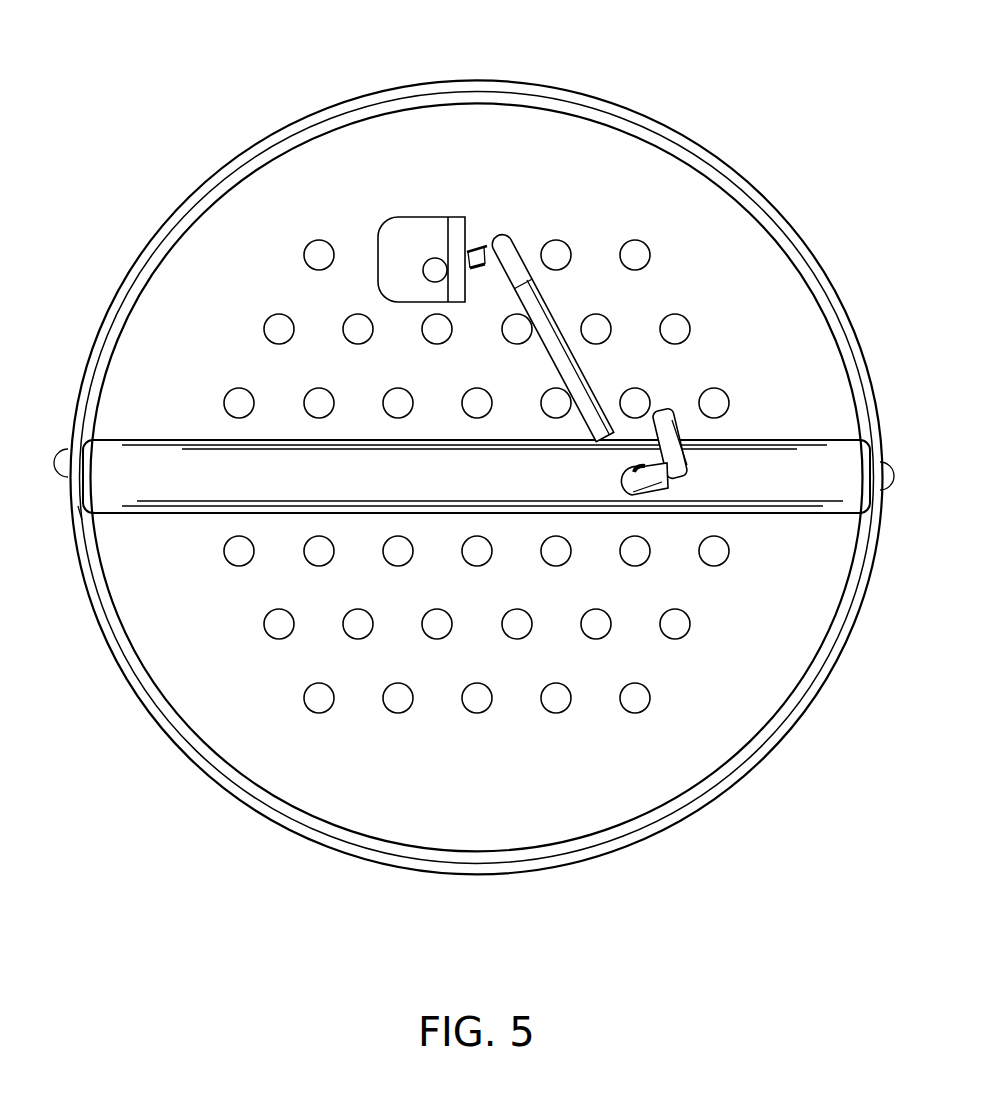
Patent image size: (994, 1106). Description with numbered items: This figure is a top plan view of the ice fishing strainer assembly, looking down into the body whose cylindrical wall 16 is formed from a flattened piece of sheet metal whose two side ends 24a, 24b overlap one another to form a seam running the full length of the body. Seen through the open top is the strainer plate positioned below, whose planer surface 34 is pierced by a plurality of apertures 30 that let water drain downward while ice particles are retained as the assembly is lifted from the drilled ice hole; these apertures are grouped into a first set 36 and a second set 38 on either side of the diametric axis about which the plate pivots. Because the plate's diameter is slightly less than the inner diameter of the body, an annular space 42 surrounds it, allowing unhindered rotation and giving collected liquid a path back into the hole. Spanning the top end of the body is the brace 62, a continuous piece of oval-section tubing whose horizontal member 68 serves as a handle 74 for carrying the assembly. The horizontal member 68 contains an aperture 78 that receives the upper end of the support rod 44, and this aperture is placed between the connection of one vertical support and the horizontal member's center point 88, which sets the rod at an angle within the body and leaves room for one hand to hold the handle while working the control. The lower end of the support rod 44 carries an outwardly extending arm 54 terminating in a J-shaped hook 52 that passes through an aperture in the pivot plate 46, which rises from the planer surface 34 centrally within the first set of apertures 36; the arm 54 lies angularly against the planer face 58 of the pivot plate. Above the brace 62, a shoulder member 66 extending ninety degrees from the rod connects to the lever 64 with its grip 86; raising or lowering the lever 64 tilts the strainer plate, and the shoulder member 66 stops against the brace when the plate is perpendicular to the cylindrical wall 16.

The cylindrical wall 16 is at (341, 101).
The side end 24a is at (79, 438).
The side end 24b is at (80, 508).
The apertures 30 is at (400, 713).
The planer surface 34 is at (623, 160).
The first set of apertures 36 is at (682, 313).
The second set of apertures 38 is at (305, 707).
The annular space 42 is at (496, 862).
The support rod 44 is at (533, 297).
The pivot plate 46 is at (447, 255).
The J-shaped hook 52 is at (425, 258).
The outwardly extending arm 54 is at (507, 240).
The planer face 58 is at (470, 242).
The brace 62 is at (858, 514).
The lever 64 is at (665, 492).
The shoulder member 66 is at (676, 490).
The horizontal member 68 is at (792, 442).
The handle 74 is at (168, 470).
The aperture 78 is at (620, 490).
The grip 86 is at (671, 410).
The center point 88 is at (455, 484).